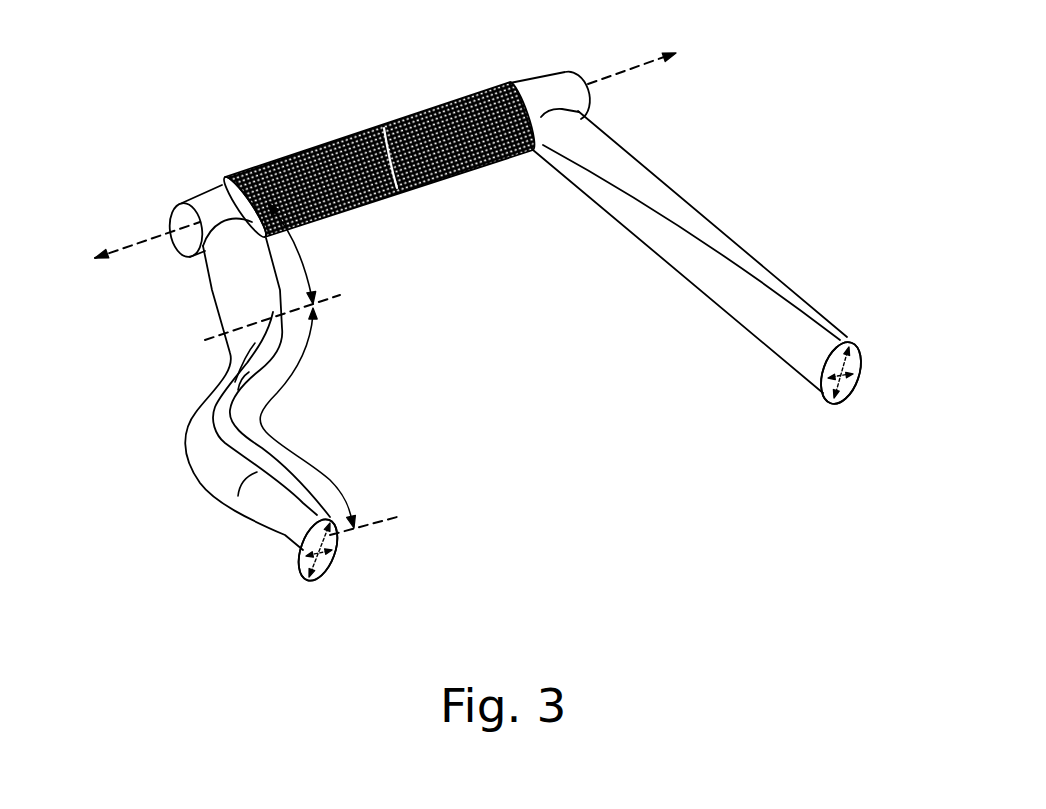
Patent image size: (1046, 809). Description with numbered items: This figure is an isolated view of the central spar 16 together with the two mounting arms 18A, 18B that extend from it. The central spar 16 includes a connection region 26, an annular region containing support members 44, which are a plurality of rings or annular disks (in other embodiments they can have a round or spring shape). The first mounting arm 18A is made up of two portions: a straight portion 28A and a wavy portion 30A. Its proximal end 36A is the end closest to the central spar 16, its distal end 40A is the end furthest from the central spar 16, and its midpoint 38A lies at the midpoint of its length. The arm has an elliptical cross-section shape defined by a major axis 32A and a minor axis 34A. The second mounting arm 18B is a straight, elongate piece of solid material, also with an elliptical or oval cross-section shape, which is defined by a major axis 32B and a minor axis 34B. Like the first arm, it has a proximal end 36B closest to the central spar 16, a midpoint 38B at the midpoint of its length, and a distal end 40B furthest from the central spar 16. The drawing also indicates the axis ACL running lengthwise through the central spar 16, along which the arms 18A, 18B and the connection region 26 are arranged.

The central spar 16 is at (180, 200).
The connection region 26 is at (212, 182).
The support members 44 is at (332, 140).
The proximal end 36A is at (205, 266).
The proximal end 36B is at (597, 120).
The mounting arm 18A is at (198, 489).
The mounting arm 18B is at (672, 178).
The midpoint 38A is at (195, 410).
The midpoint 38B is at (730, 236).
The straight portion 28A is at (301, 253).
The wavy portion 30A is at (323, 466).
The major axis 32A is at (302, 566).
The major axis 32B is at (830, 396).
The minor axis 34A is at (332, 560).
The minor axis 34B is at (853, 383).
The distal end 40A is at (318, 516).
The distal end 40B is at (845, 345).
The central longitudinal axis ACL is at (150, 239).